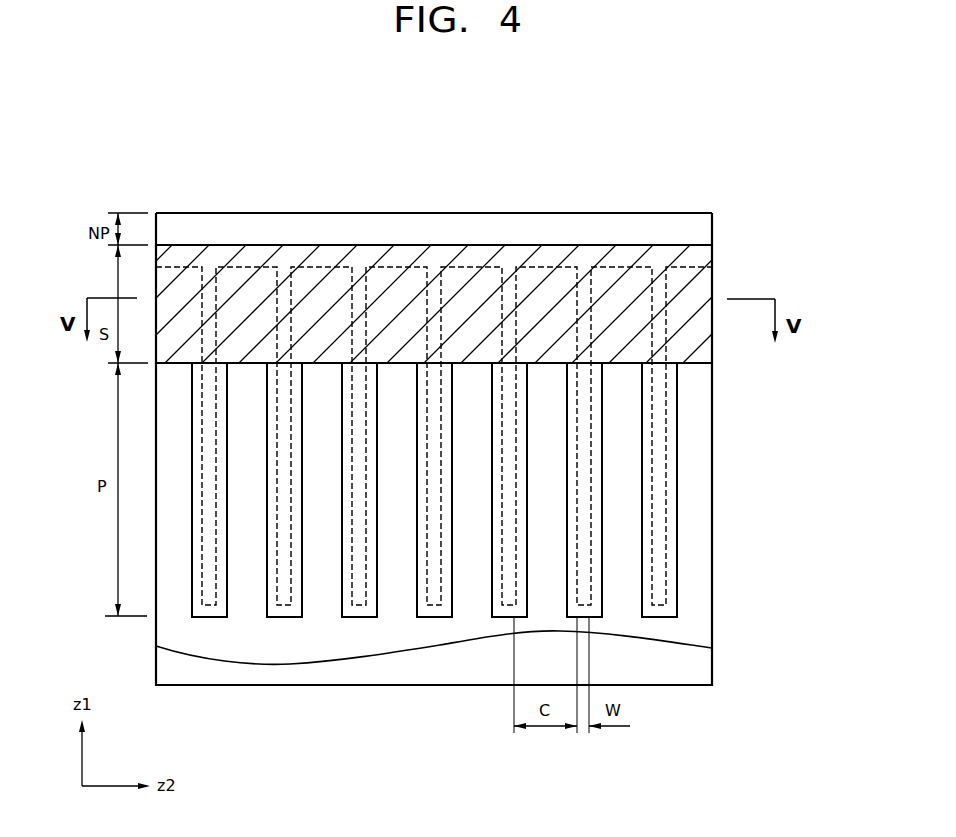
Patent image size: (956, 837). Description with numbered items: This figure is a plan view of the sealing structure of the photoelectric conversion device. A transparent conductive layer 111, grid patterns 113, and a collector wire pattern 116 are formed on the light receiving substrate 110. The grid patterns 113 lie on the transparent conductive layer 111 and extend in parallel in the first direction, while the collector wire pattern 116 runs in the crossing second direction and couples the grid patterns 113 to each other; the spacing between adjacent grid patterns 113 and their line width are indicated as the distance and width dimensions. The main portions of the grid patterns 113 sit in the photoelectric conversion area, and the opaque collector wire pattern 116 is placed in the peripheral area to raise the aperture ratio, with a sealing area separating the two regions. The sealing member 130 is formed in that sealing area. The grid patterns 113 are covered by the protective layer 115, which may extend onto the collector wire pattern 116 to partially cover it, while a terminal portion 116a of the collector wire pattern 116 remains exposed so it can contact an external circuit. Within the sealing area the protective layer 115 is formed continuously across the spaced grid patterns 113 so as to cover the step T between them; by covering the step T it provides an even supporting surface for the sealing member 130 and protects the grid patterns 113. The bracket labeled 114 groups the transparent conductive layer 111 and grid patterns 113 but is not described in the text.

The light receiving substrate 110 is at (693, 669).
The transparent conductive layer 111 is at (697, 487).
The grid patterns 113 is at (667, 533).
The fin structure (111 and 113) 114 is at (792, 482).
The protective layer 115 is at (673, 578).
The collector wire pattern 116 is at (712, 230).
The terminal portion of the collector wire pattern 116a is at (668, 228).
The sealing member 130 is at (437, 250).
The step T is at (544, 316).